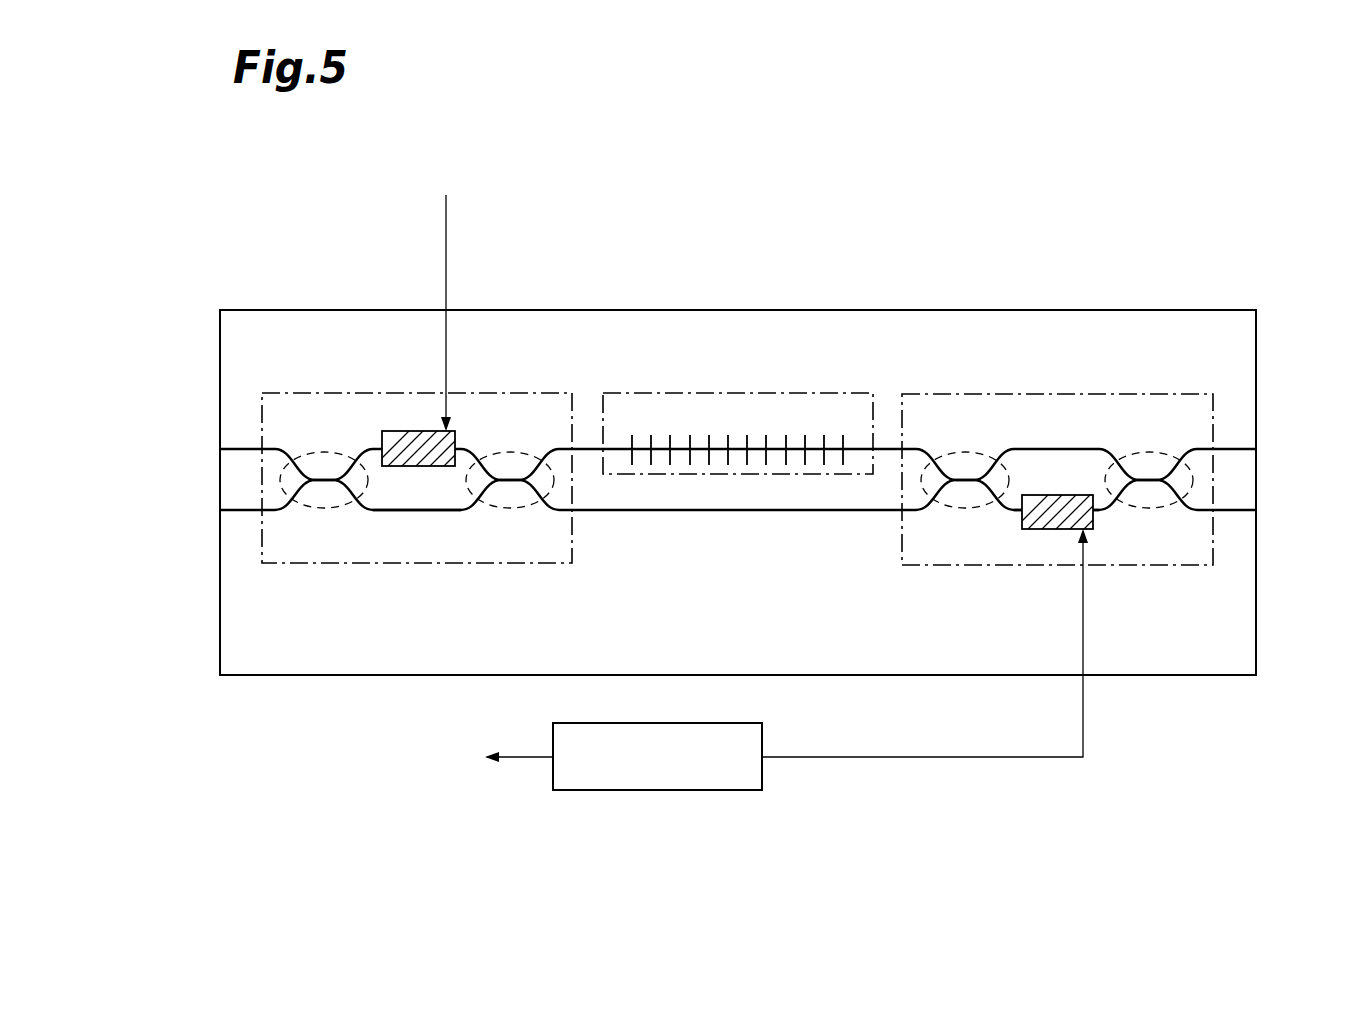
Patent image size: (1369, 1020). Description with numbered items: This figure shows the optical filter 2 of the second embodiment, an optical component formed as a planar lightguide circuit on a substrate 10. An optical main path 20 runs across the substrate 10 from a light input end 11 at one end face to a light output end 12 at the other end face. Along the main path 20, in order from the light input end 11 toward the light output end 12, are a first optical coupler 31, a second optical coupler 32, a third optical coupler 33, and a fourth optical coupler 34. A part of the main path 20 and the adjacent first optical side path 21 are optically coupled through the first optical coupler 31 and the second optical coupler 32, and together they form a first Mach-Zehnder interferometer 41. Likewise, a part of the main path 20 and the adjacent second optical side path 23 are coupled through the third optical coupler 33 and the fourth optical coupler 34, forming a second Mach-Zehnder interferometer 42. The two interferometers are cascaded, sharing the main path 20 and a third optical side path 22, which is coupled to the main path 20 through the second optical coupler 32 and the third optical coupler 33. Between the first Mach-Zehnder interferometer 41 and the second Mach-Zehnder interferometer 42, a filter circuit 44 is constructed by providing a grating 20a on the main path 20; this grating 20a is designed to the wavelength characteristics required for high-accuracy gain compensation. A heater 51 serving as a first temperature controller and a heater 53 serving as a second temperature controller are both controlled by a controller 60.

The optical filter 2 is at (940, 165).
The substrate 10 is at (520, 310).
The light input end 11 is at (222, 449).
The light output end 12 is at (1256, 449).
The optical main path 20 is at (888, 449).
The grating 20a is at (696, 435).
The first optical side path 21 is at (413, 511).
The third optical side path 22 is at (743, 511).
The second optical side path 23 is at (1008, 511).
The first optical coupler 31 is at (325, 511).
The second optical coupler 32 is at (509, 511).
The third optical coupler 33 is at (955, 511).
The fourth optical coupler 34 is at (1140, 511).
The first Mach-Zehnder interferometer 41 is at (358, 393).
The second Mach-Zehnder interferometer 42 is at (1078, 394).
The filter circuit 44 is at (760, 393).
The heater 51 is at (424, 431).
The heater 53 is at (1053, 531).
The controller 60 is at (719, 791).